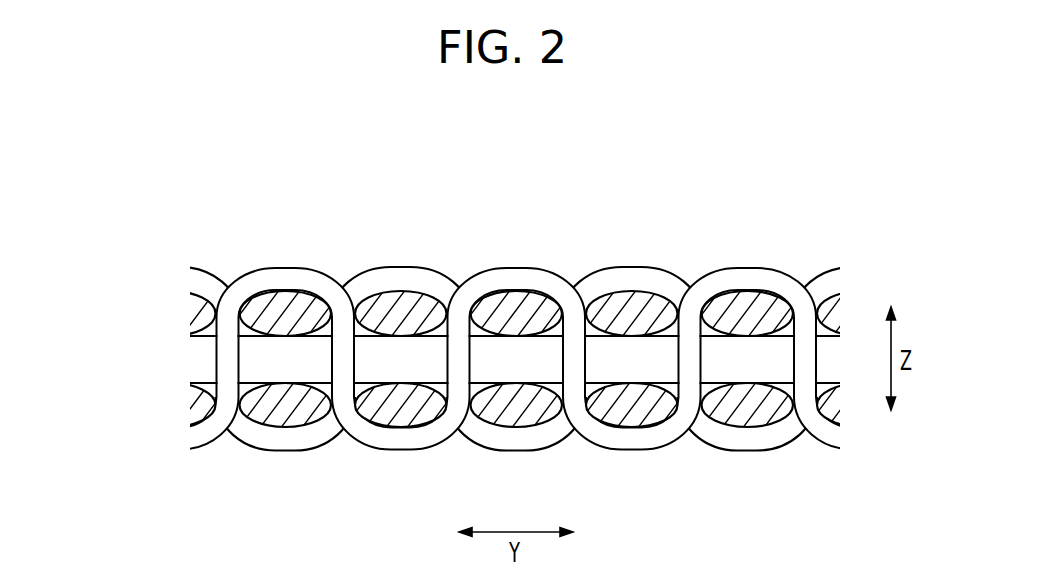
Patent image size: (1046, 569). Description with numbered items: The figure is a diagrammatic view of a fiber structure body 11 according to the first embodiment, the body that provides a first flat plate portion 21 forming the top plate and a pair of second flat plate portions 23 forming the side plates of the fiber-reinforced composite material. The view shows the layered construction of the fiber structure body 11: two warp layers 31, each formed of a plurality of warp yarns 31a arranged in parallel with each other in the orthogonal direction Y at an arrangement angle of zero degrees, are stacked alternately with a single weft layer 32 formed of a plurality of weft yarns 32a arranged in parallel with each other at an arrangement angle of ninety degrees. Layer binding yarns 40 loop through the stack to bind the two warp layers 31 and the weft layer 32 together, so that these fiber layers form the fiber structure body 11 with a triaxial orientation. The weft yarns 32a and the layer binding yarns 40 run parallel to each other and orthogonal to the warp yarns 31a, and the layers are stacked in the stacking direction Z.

The fiber structure body 11 is at (545, 355).
The first flat plate portion 21 is at (516, 321).
The second flat plate portions 23 is at (520, 267).
The warp layers 31 is at (545, 360).
The warp yarns 31a is at (303, 302).
The weft layer 32 is at (475, 417).
The weft yarns 32a is at (397, 365).
The layer binding yarns 40 is at (407, 267).